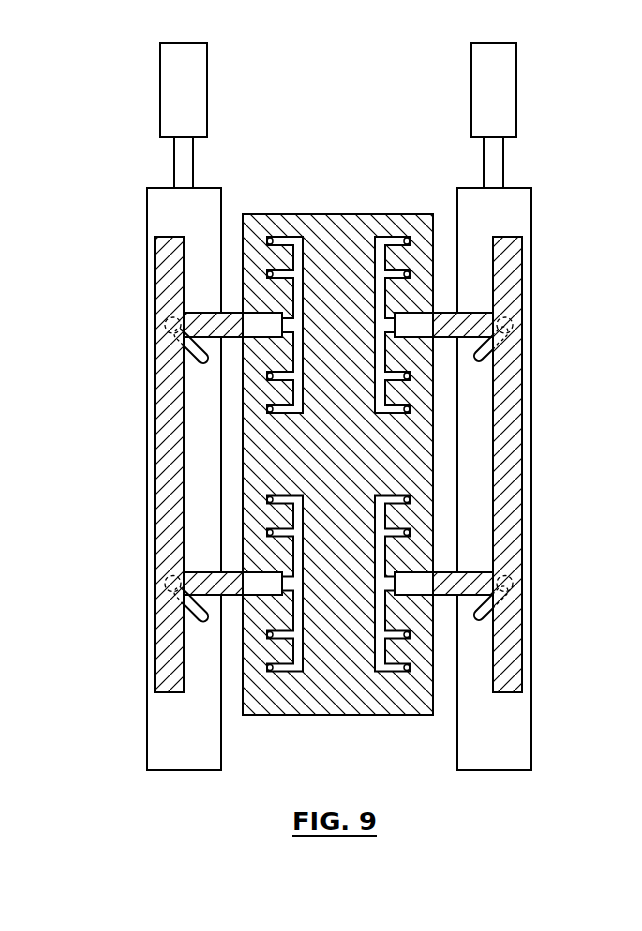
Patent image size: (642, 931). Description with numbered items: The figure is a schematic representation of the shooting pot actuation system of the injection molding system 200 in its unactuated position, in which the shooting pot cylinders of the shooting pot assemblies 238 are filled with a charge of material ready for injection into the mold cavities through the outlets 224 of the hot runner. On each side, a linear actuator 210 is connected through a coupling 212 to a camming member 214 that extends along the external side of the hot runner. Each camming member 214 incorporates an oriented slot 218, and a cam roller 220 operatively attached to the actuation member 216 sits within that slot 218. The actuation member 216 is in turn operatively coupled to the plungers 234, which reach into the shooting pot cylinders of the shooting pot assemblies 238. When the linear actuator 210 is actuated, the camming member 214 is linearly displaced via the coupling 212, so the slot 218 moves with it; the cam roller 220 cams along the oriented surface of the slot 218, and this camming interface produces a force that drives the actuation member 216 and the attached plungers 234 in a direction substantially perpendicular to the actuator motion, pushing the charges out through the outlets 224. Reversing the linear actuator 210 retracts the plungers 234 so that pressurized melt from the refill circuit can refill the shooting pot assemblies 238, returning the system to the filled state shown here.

The injection molding system 200 is at (141, 100).
The linear actuator 210 is at (518, 92).
The coupling 212 is at (500, 168).
The camming member 214 is at (532, 313).
The actuation member 216 is at (522, 425).
The slot 218 is at (522, 608).
The cam roller 220 is at (515, 585).
The outlet 224 is at (407, 673).
The plunger 234 is at (445, 587).
The shooting pot assembly 238 is at (262, 587).